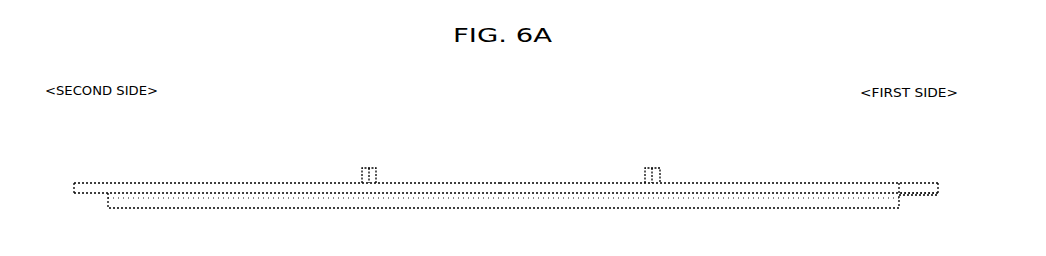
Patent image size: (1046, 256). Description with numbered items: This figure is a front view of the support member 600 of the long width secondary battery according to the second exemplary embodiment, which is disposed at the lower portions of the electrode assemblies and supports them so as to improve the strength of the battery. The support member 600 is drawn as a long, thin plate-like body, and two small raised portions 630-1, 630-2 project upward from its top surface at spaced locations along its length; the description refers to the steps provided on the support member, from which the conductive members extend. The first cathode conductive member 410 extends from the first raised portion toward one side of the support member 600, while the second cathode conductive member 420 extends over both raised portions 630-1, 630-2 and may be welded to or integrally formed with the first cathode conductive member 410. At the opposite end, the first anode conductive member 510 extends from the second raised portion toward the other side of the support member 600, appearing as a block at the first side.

The first cathode conductive member 410 is at (227, 185).
The second cathode conductive member 420 is at (591, 187).
The first anode conductive member 510 is at (914, 184).
The support member 600 is at (761, 192).
The first protrusion 630-1 is at (379, 163).
The second protrusion 630-2 is at (662, 163).